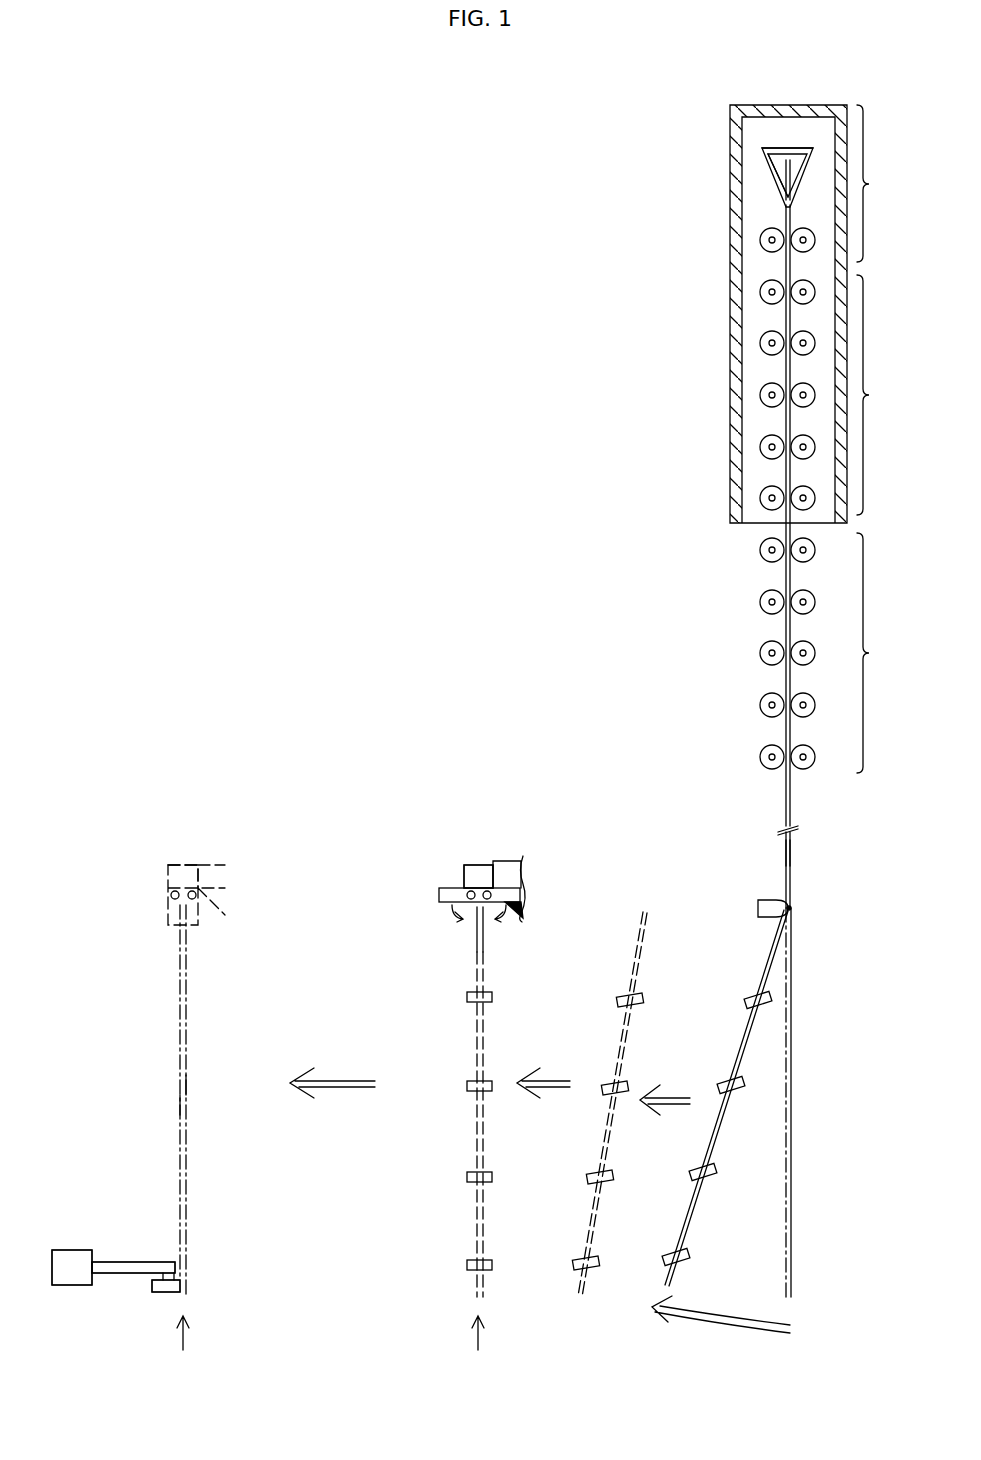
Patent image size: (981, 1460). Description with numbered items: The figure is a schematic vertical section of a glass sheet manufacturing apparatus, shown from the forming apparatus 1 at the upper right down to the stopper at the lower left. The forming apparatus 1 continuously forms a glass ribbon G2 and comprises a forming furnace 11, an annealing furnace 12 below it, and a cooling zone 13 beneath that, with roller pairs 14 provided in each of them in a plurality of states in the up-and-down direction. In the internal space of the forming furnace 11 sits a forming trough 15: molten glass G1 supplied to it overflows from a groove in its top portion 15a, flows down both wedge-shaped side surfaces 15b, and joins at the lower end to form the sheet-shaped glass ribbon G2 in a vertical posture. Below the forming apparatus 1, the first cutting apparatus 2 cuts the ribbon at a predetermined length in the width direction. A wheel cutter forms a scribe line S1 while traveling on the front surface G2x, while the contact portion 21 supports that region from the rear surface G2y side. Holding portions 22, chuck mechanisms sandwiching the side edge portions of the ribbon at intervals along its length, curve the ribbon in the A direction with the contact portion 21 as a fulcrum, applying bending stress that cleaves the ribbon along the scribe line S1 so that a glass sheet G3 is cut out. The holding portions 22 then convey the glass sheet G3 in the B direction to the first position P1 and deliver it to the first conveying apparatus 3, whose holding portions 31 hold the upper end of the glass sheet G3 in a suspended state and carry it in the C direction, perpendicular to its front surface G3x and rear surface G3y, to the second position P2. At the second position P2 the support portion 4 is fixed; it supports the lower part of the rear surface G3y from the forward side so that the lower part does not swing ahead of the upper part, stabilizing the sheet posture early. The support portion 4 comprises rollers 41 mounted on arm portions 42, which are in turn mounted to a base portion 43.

The forming apparatus 1 is at (825, 100).
The forming furnace 11 is at (880, 183).
The annealing furnace 12 is at (880, 395).
The cooling zone 13 is at (880, 653).
The roller pairs 14 is at (760, 343).
The forming trough 15 is at (778, 191).
The top portion of forming trough 15a is at (782, 150).
The side surfaces of forming trough 15b is at (778, 178).
The molten glass G1 is at (795, 150).
The glass ribbon G2 is at (786, 476).
The front surface of glass ribbon G2x is at (790, 858).
The rear surface of glass ribbon G2y is at (786, 852).
The first cutting apparatus 2 is at (845, 978).
The contact portion 21 is at (758, 909).
The scribe line S1 is at (791, 909).
The holding portions 22 is at (467, 997).
The first conveying apparatus 3 is at (492, 840).
The holding portions of first conveying apparatus 31 is at (476, 868).
The glass sheet G3 is at (496, 944).
The front surface of glass sheet G3x is at (186, 1085).
The rear surface of glass sheet G3y is at (180, 1105).
The support portion (stopper) 4 is at (120, 1240).
The rollers 41 is at (163, 1292).
The arm portions 42 is at (116, 1268).
The base portion 43 is at (66, 1275).
The A direction A is at (702, 1328).
The B direction B is at (549, 1088).
The C direction C is at (341, 1088).
The first position P1 is at (477, 1350).
The second position P2 is at (182, 1348).